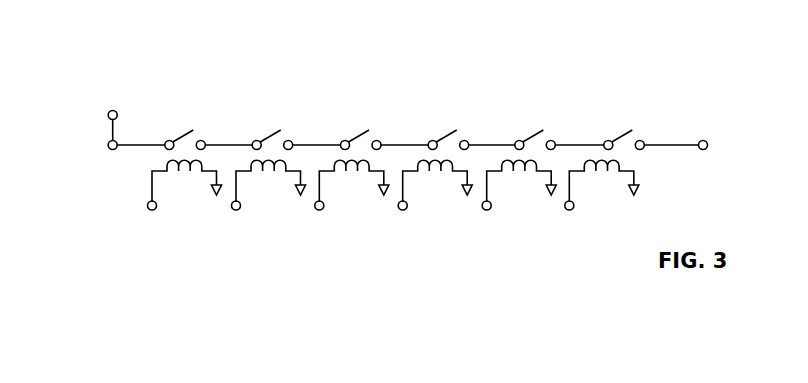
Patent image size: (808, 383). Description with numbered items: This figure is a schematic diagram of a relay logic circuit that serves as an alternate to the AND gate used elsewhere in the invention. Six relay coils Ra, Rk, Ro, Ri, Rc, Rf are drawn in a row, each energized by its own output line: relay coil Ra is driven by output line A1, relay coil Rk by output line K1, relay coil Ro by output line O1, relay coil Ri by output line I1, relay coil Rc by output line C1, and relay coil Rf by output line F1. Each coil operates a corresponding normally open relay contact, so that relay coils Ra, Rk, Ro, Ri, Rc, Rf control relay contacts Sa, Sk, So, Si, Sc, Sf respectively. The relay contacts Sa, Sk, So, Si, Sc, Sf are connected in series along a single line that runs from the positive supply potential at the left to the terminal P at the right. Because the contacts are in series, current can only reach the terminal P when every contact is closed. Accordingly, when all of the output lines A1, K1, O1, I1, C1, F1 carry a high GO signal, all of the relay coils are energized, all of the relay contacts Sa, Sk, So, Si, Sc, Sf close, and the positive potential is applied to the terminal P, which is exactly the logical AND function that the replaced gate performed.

The terminal P is at (714, 149).
The relay contact Sa is at (185, 124).
The relay contact Sk is at (272, 124).
The relay contact So is at (361, 124).
The relay contact Si is at (448, 124).
The relay contact Sc is at (535, 124).
The relay contact Sf is at (624, 124).
The relay coil Ra is at (187, 183).
The relay coil Rk is at (271, 183).
The relay coil Ro is at (354, 183).
The relay coil Ri is at (438, 183).
The relay coil Rc is at (522, 183).
The relay coil Rf is at (604, 183).
The output line K1 is at (155, 222).
The output line A1 is at (238, 222).
The output line O1 is at (322, 222).
The output line I1 is at (405, 222).
The output line C1 is at (489, 222).
The output line F1 is at (572, 222).